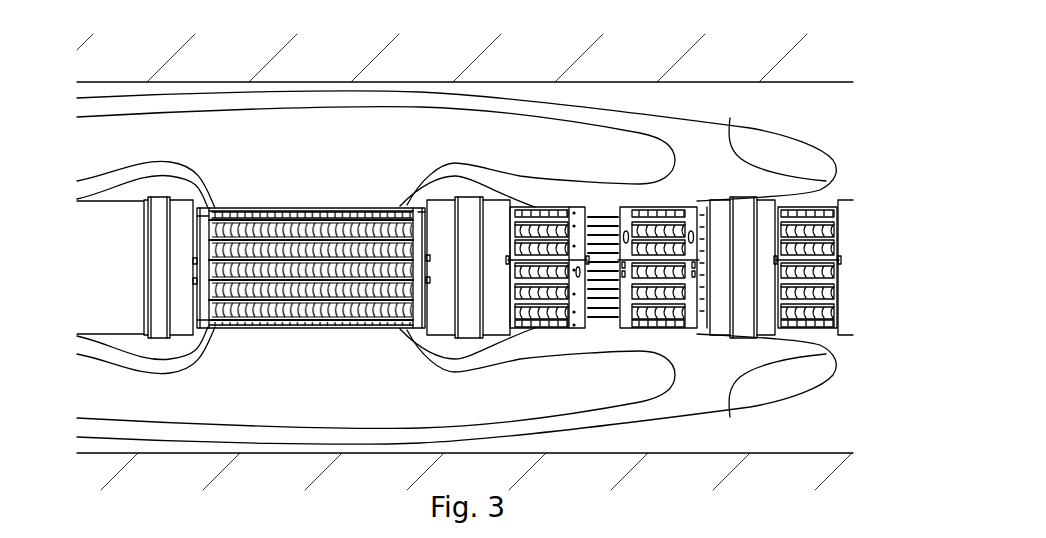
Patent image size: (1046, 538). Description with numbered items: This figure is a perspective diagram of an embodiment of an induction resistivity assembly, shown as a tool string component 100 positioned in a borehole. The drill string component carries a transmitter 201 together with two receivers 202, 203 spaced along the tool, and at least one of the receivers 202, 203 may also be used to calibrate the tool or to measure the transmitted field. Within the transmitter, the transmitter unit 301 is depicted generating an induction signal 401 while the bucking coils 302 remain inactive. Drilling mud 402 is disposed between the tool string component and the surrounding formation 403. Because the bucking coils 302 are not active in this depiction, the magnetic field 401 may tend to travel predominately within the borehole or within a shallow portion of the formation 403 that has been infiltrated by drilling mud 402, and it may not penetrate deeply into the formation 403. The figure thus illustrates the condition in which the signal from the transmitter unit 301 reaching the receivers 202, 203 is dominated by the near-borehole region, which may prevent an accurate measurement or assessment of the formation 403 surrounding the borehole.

The gas turbine engine 100 is at (465, 211).
The transmitter 201 is at (283, 164).
The receiver 202 is at (538, 204).
The receiver 203 is at (663, 208).
The transmitter unit 301 is at (243, 210).
The bucking coils 302 is at (196, 208).
The induction signal 401 is at (552, 103).
The drilling mud 402 is at (782, 107).
The formation 403 is at (758, 477).